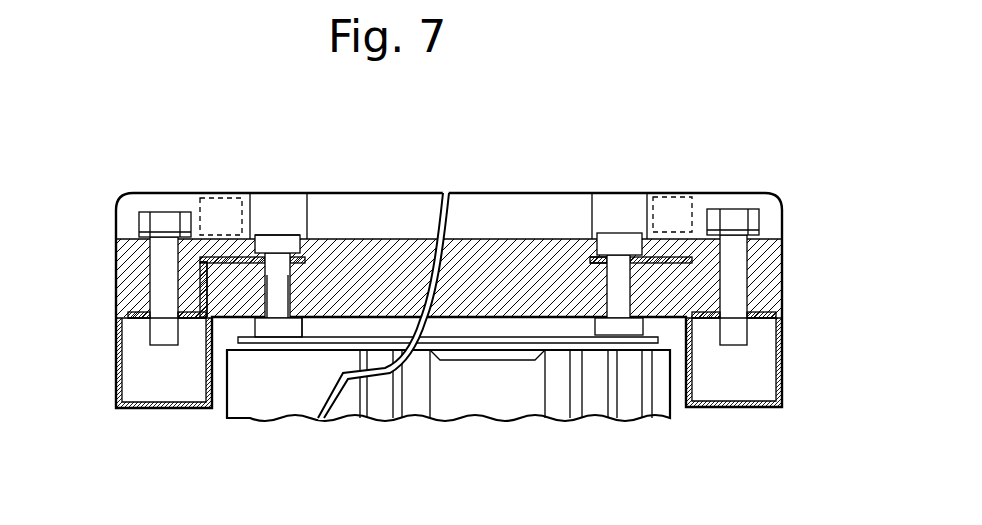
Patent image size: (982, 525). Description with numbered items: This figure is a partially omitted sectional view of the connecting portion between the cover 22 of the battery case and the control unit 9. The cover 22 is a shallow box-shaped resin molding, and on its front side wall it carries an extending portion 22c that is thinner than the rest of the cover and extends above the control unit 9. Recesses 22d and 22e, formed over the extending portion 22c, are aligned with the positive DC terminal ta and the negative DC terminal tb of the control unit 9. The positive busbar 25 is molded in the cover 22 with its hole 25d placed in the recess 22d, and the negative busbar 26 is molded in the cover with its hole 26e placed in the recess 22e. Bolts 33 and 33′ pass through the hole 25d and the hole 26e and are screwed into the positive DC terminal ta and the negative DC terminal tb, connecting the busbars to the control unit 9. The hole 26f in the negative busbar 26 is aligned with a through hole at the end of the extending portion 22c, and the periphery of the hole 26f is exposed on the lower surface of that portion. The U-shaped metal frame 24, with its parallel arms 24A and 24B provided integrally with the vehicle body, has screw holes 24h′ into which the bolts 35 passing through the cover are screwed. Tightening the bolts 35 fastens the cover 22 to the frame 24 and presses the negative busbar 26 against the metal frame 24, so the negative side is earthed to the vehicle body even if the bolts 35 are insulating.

The control unit 9 is at (672, 406).
The cover 22 is at (516, 193).
The extending portion 22c is at (471, 240).
The recess 22d is at (628, 220).
The recess 22e is at (285, 222).
The metal frame 24 is at (783, 366).
The arm 24A is at (118, 375).
The arm 24B is at (783, 388).
The screw hole 24h′ is at (165, 318).
The positive busbar 25 is at (682, 255).
The hole 25d is at (605, 267).
The negative busbar 26 is at (235, 265).
The hole 26e is at (283, 250).
The hole 26f is at (173, 312).
The bolt 33 is at (611, 242).
The bolt 33′ is at (268, 242).
The bolt 35 is at (166, 218).
The positive DC terminal ta is at (593, 328).
The negative DC terminal tb is at (308, 345).